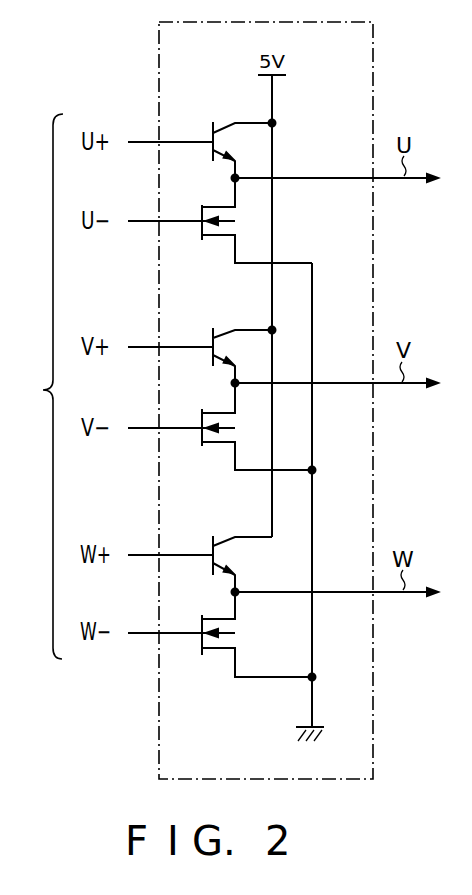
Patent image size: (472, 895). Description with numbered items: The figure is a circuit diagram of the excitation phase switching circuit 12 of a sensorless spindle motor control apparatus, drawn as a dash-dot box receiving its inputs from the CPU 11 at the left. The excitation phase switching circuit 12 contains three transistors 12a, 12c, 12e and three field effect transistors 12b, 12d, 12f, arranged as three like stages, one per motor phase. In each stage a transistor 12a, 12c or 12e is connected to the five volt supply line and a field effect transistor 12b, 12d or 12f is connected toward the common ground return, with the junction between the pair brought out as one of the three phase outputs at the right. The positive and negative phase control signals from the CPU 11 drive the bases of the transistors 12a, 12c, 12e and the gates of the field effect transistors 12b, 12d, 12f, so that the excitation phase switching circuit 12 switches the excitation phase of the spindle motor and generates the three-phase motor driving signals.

The CPU 11 is at (34, 386).
The excitation phase switching circuit 12 is at (373, 37).
The transistor 12a is at (232, 119).
The field effect transistor 12b is at (215, 202).
The transistor 12c is at (230, 328).
The field effect transistor 12d is at (215, 408).
The transistor 12e is at (228, 534).
The field effect transistor 12f is at (215, 617).